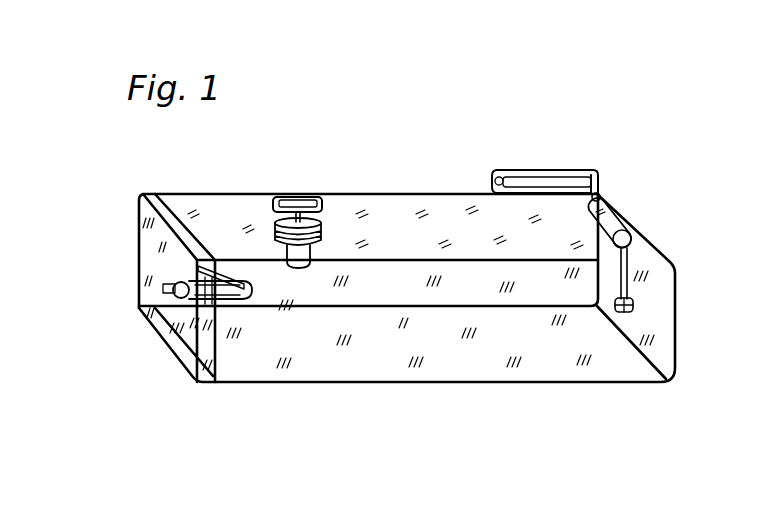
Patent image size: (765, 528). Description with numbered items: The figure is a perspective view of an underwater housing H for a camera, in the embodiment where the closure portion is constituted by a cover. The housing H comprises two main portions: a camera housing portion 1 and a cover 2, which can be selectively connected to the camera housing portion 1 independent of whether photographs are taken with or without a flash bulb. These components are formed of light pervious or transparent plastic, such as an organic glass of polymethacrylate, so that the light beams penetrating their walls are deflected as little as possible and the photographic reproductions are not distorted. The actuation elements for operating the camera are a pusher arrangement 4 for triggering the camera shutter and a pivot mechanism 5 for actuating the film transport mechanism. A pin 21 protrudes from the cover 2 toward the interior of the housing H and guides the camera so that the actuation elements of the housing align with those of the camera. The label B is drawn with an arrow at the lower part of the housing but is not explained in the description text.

The camera housing portion 1 is at (393, 287).
The cover 2 is at (162, 266).
The pin 21 is at (245, 277).
The pusher arrangement 4 is at (292, 176).
The pivot mechanism 5 is at (620, 177).
The underwater housing H is at (137, 171).
The width direction B is at (455, 409).